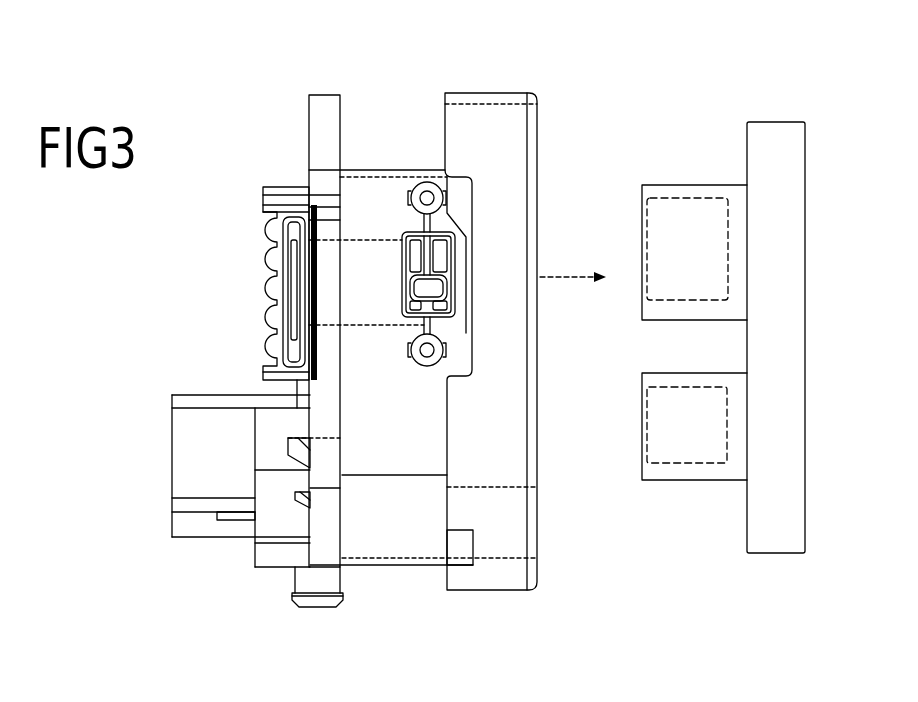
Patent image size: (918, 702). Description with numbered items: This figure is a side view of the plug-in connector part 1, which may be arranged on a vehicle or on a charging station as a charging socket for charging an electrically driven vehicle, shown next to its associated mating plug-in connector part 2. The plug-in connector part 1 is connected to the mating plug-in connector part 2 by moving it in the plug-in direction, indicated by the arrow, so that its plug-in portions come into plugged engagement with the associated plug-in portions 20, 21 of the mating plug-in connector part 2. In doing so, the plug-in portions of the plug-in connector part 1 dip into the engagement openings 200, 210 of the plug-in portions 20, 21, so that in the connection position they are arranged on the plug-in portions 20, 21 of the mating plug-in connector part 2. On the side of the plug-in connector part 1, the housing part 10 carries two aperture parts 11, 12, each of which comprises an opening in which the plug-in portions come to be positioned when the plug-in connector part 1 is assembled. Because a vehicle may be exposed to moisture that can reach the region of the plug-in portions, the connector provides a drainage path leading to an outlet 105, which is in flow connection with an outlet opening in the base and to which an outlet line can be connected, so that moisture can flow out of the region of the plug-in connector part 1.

The plug-in connector part 1 is at (550, 86).
The mating plug-in connector part 2 is at (773, 100).
The housing part 10 is at (278, 540).
The outlet 105 is at (318, 587).
The aperture part 11 is at (398, 543).
The aperture part 12 is at (489, 570).
The plug-in portion 20 is at (690, 185).
The engagement opening 200 is at (662, 201).
The plug-in portion 21 is at (690, 482).
The engagement opening 210 is at (664, 456).